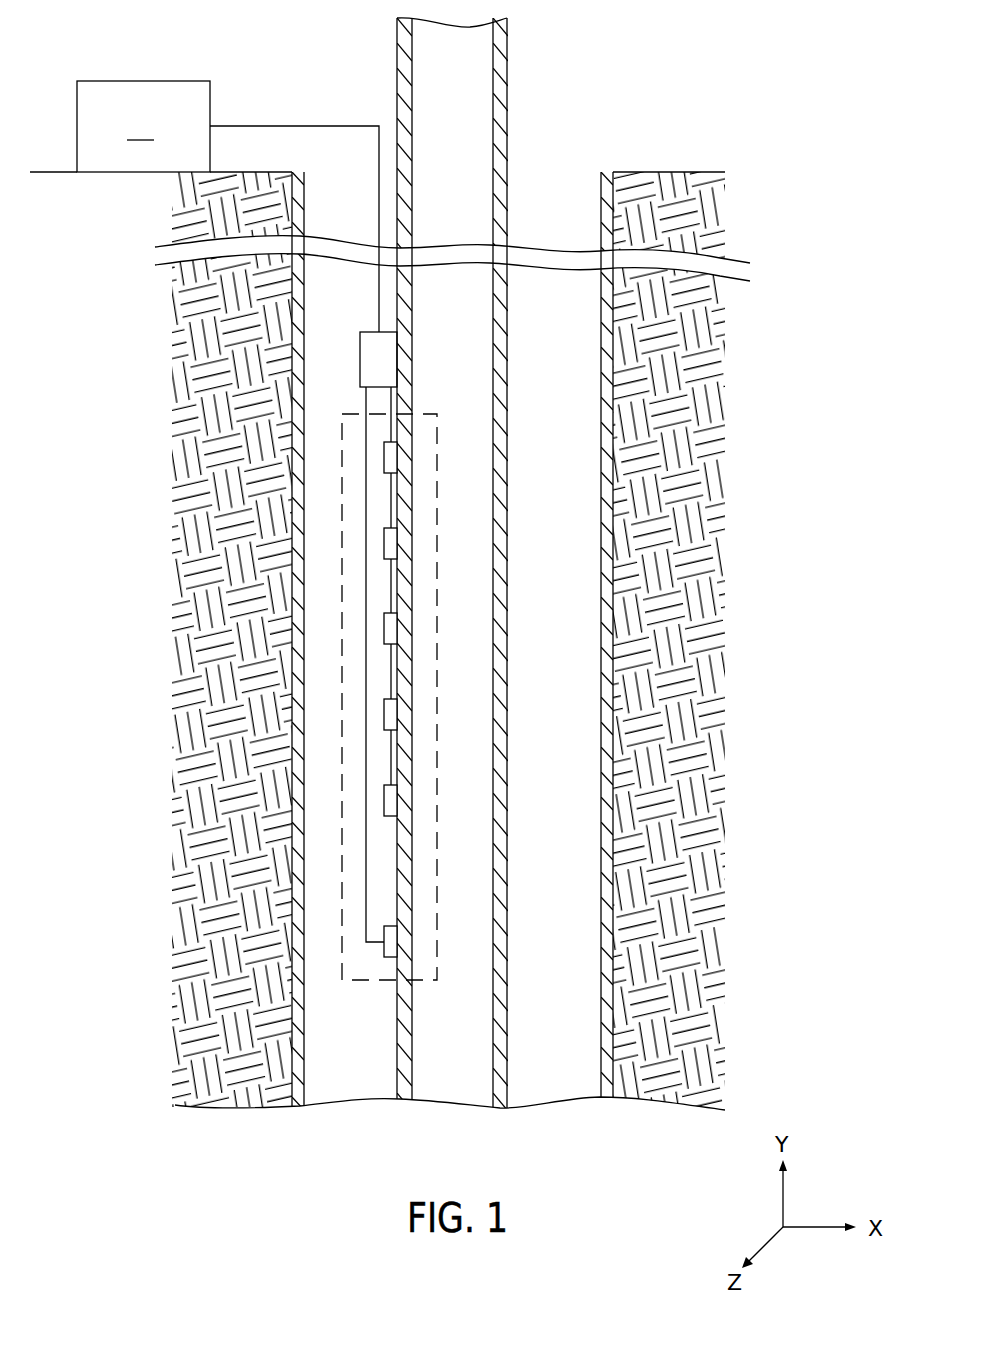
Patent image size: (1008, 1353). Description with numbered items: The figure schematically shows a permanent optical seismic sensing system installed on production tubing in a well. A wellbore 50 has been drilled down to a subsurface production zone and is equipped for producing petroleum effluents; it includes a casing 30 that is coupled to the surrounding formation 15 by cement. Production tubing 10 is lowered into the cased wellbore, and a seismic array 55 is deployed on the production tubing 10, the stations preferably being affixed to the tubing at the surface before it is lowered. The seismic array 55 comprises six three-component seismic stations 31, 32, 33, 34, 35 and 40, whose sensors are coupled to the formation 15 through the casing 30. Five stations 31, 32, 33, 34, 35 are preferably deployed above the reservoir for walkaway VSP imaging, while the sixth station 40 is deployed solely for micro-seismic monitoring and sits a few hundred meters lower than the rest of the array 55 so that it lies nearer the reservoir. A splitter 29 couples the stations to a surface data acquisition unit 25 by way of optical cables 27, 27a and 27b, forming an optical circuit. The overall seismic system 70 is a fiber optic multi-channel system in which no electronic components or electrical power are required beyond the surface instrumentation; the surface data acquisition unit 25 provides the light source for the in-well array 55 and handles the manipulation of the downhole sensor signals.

The production tubing 10 is at (507, 60).
The formation 15 is at (670, 530).
The surface data acquisition unit 25 is at (143, 126).
The optical cable 27 is at (265, 126).
The optical cable 27a is at (391, 400).
The optical cable 27b is at (365, 493).
The splitter 29 is at (360, 362).
The casing 30 is at (607, 602).
The seismic station 31 is at (393, 458).
The seismic station 32 is at (393, 543).
The seismic station 33 is at (393, 629).
The seismic station 34 is at (393, 715).
The seismic station 35 is at (393, 800).
The sixth seismic station 40 is at (393, 941).
The wellbore 50 is at (616, 482).
The seismic array 55 is at (351, 982).
The seismic system 70 is at (326, 772).